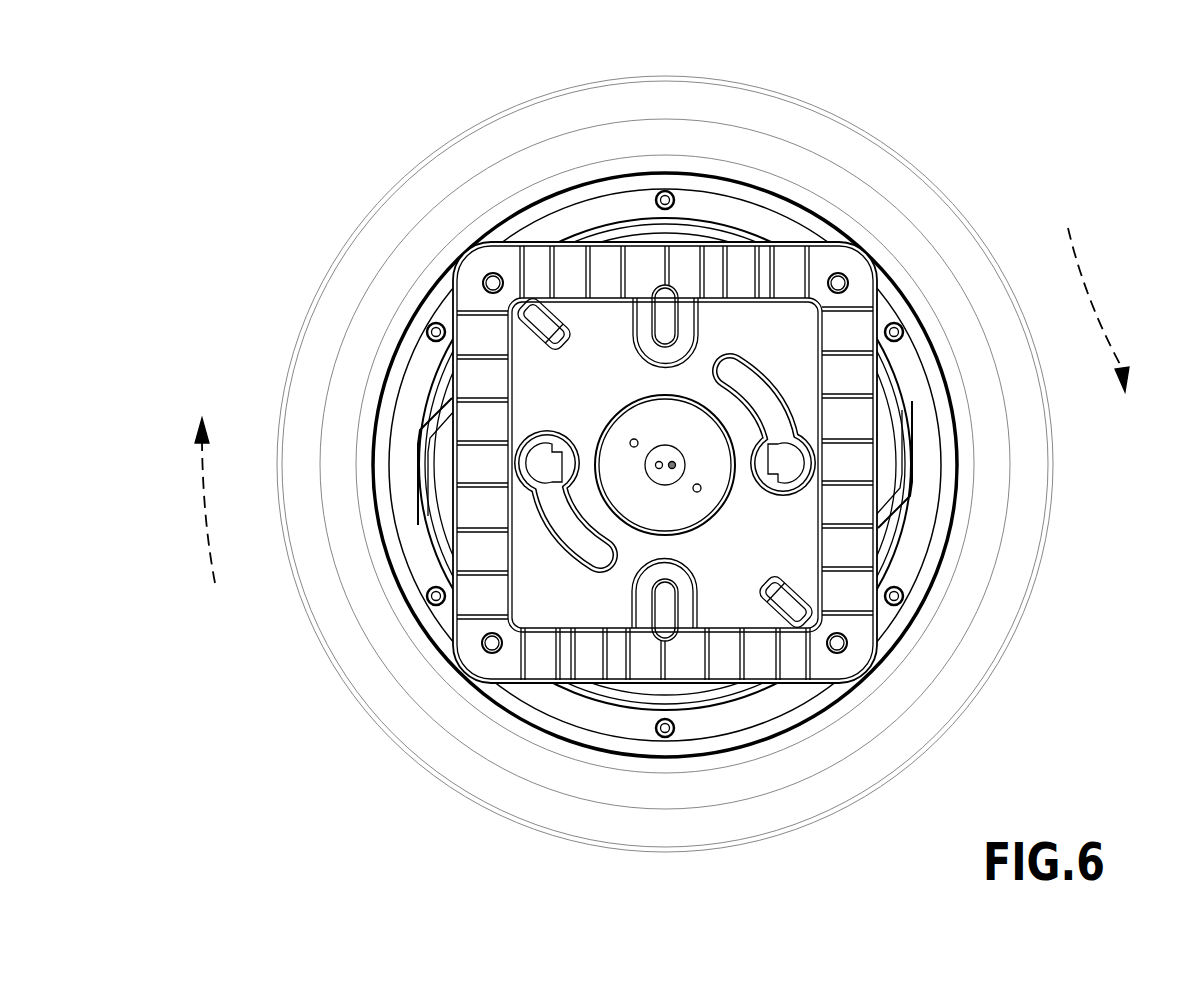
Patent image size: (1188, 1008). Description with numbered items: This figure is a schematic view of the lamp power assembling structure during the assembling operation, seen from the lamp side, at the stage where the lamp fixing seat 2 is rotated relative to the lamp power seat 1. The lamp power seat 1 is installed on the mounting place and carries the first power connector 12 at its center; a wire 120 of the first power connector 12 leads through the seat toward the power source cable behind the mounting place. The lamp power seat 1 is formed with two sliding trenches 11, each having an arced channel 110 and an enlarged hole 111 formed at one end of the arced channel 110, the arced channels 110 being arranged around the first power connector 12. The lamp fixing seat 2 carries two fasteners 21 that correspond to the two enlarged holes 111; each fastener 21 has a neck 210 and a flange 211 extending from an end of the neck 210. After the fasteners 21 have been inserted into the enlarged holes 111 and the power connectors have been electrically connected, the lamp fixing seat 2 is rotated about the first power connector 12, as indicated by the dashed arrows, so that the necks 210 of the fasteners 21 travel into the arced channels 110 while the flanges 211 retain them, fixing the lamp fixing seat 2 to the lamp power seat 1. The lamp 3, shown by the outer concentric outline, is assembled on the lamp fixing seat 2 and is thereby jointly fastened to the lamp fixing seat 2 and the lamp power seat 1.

The lamp power seat 1 is at (688, 236).
The lamp fixing seat 2 is at (822, 212).
The lamp 3 is at (957, 200).
The sliding trench 11 is at (959, 511).
The arced channel 110 is at (760, 388).
The enlarged hole 111 is at (762, 480).
The first power connector 12 is at (473, 320).
The wire 120 is at (650, 412).
The fastener 21 is at (406, 605).
The neck 210 is at (558, 472).
The flange 211 is at (540, 462).